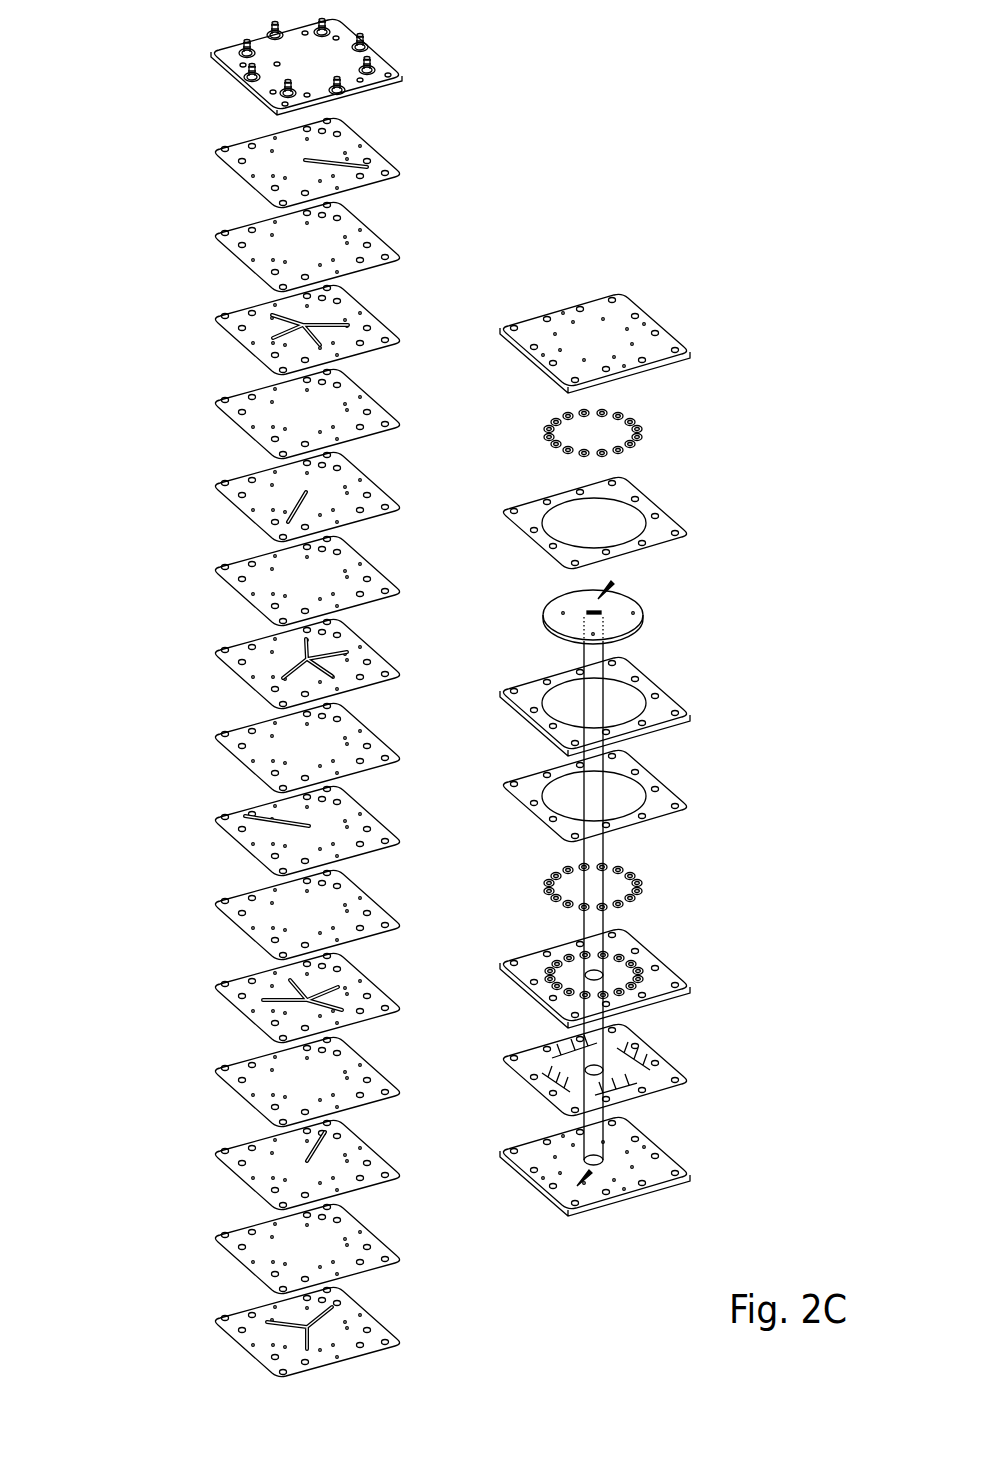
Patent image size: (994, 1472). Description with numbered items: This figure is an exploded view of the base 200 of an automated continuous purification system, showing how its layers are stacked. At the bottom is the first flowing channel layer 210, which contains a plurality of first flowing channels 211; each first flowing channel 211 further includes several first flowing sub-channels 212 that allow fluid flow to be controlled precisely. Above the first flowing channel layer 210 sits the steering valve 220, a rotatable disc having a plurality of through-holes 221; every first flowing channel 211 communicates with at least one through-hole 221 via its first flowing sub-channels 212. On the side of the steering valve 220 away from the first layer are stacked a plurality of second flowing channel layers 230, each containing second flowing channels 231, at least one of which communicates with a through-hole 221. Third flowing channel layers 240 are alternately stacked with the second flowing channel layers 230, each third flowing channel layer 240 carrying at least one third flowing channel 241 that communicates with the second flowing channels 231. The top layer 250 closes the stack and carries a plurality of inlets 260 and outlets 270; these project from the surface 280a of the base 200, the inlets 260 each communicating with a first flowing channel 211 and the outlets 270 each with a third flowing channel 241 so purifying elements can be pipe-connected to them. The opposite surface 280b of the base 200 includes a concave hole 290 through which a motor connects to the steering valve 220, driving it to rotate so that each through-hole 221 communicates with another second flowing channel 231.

The base 200 is at (76, 37).
The first flowing channel layer 210 is at (606, 1072).
The first flowing channels 211 is at (650, 1050).
The first flowing sub-channels 212 is at (668, 1092).
The steering valve 220 is at (637, 627).
The through-holes 221 is at (615, 582).
The second flowing channel layers 230 is at (362, 301).
The second flowing channels 231 is at (301, 327).
The third flowing channel layers 240 is at (390, 160).
The third flowing channel 241 is at (305, 162).
The top layer 250 is at (384, 69).
The inlets 260 is at (268, 35).
The outlets 270 is at (282, 62).
The surface 280a is at (378, 92).
The surface 280b is at (626, 1198).
The concave hole 290 is at (578, 1182).